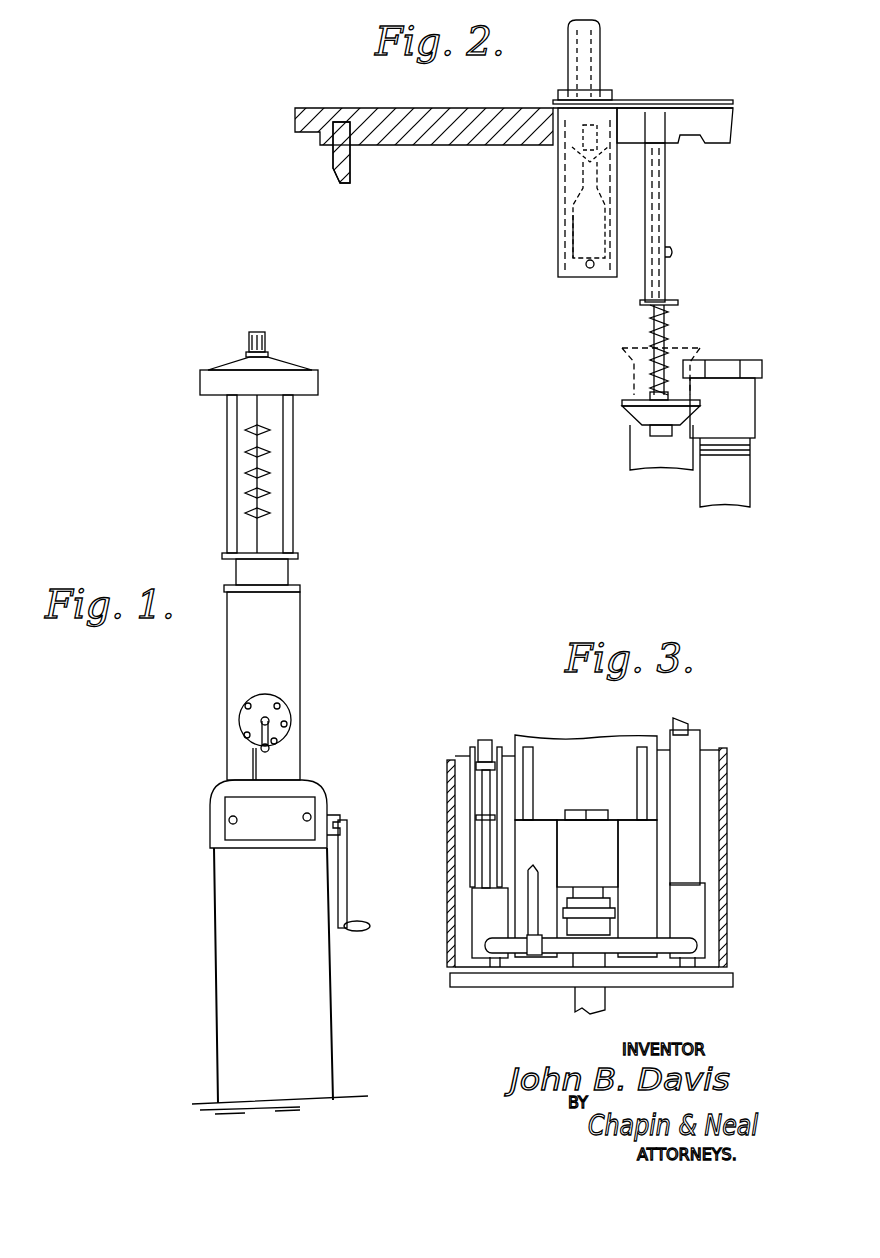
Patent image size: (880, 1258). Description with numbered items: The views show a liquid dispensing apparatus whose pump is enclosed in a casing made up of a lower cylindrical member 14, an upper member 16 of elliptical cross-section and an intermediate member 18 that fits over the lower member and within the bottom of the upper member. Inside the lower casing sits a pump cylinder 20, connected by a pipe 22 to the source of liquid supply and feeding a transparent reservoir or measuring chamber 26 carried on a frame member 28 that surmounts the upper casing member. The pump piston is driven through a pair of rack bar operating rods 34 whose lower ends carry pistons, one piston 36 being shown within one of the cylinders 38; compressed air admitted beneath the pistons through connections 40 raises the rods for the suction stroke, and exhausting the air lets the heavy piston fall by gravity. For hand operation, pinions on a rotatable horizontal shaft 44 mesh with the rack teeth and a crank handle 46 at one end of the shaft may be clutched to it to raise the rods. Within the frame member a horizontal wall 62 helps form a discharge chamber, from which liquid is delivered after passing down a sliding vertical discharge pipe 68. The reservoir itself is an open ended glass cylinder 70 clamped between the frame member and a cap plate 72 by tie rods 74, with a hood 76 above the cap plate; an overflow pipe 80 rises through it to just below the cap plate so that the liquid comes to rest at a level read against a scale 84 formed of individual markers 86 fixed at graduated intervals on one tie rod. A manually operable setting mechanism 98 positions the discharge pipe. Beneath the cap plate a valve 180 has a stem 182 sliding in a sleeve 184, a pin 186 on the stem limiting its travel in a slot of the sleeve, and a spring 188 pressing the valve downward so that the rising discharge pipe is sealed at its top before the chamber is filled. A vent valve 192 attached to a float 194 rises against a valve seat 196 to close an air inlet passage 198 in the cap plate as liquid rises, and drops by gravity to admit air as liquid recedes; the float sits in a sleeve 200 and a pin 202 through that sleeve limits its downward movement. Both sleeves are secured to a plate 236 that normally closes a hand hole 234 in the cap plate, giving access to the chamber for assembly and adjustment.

In FIG. 1, the lower cylindrical casing member 14 is at (232, 1034).
In FIG. 3, the lower cylindrical casing member 14 is at (727, 858).
In FIG. 1, the upper casing member 16 is at (277, 632).
In FIG. 1, the intermediate casing member 18 is at (208, 827).
In FIG. 3, the pump cylinder 20 is at (560, 748).
In FIG. 3, the pipe 22 is at (588, 990).
In FIG. 2, the transparent reservoir or measuring chamber 26 is at (380, 160).
In FIG. 1, the transparent reservoir or measuring chamber 26 is at (218, 474).
In FIG. 1, the frame member 28 is at (262, 585).
In FIG. 3, the rack bar operating rods 34 is at (482, 740).
In FIG. 3, the piston 36 is at (485, 862).
In FIG. 3, the cylinders 38 is at (450, 782).
In FIG. 3, the connections 40 is at (535, 922).
In FIG. 1, the rotatable horizontal shaft 44 is at (345, 822).
In FIG. 1, the crank handle 46 is at (347, 901).
In FIG. 2, the horizontal wall 62 is at (722, 399).
In FIG. 2, the sliding vertical discharge pipe 68 is at (632, 460).
In FIG. 2, the open ended glass cylinder 70 is at (333, 167).
In FIG. 2, the cap plate 72 is at (437, 118).
In FIG. 1, the tie rods 74 is at (256, 418).
In FIG. 1, the hood 76 is at (262, 367).
In FIG. 2, the overflow pipe 80 is at (716, 482).
In FIG. 1, the scale 84 is at (280, 483).
In FIG. 1, the individual markers 86 is at (268, 452).
In FIG. 1, the manually operable setting mechanism 98 is at (282, 718).
In FIG. 2, the valve 180 is at (650, 413).
In FIG. 2, the stem 182 is at (663, 328).
In FIG. 2, the sleeve 184 is at (652, 203).
In FIG. 2, the pin 186 is at (670, 252).
In FIG. 2, the spring 188 is at (655, 318).
In FIG. 2, the vent valve 192 is at (575, 167).
In FIG. 2, the float 194 is at (573, 235).
In FIG. 2, the valve seat 196 is at (590, 152).
In FIG. 2, the air inlet passage 198 is at (568, 60).
In FIG. 2, the sleeve 200 is at (557, 228).
In FIG. 2, the pin 202 is at (587, 268).
In FIG. 2, the hand hole 234 is at (693, 108).
In FIG. 2, the plate 236 is at (628, 102).